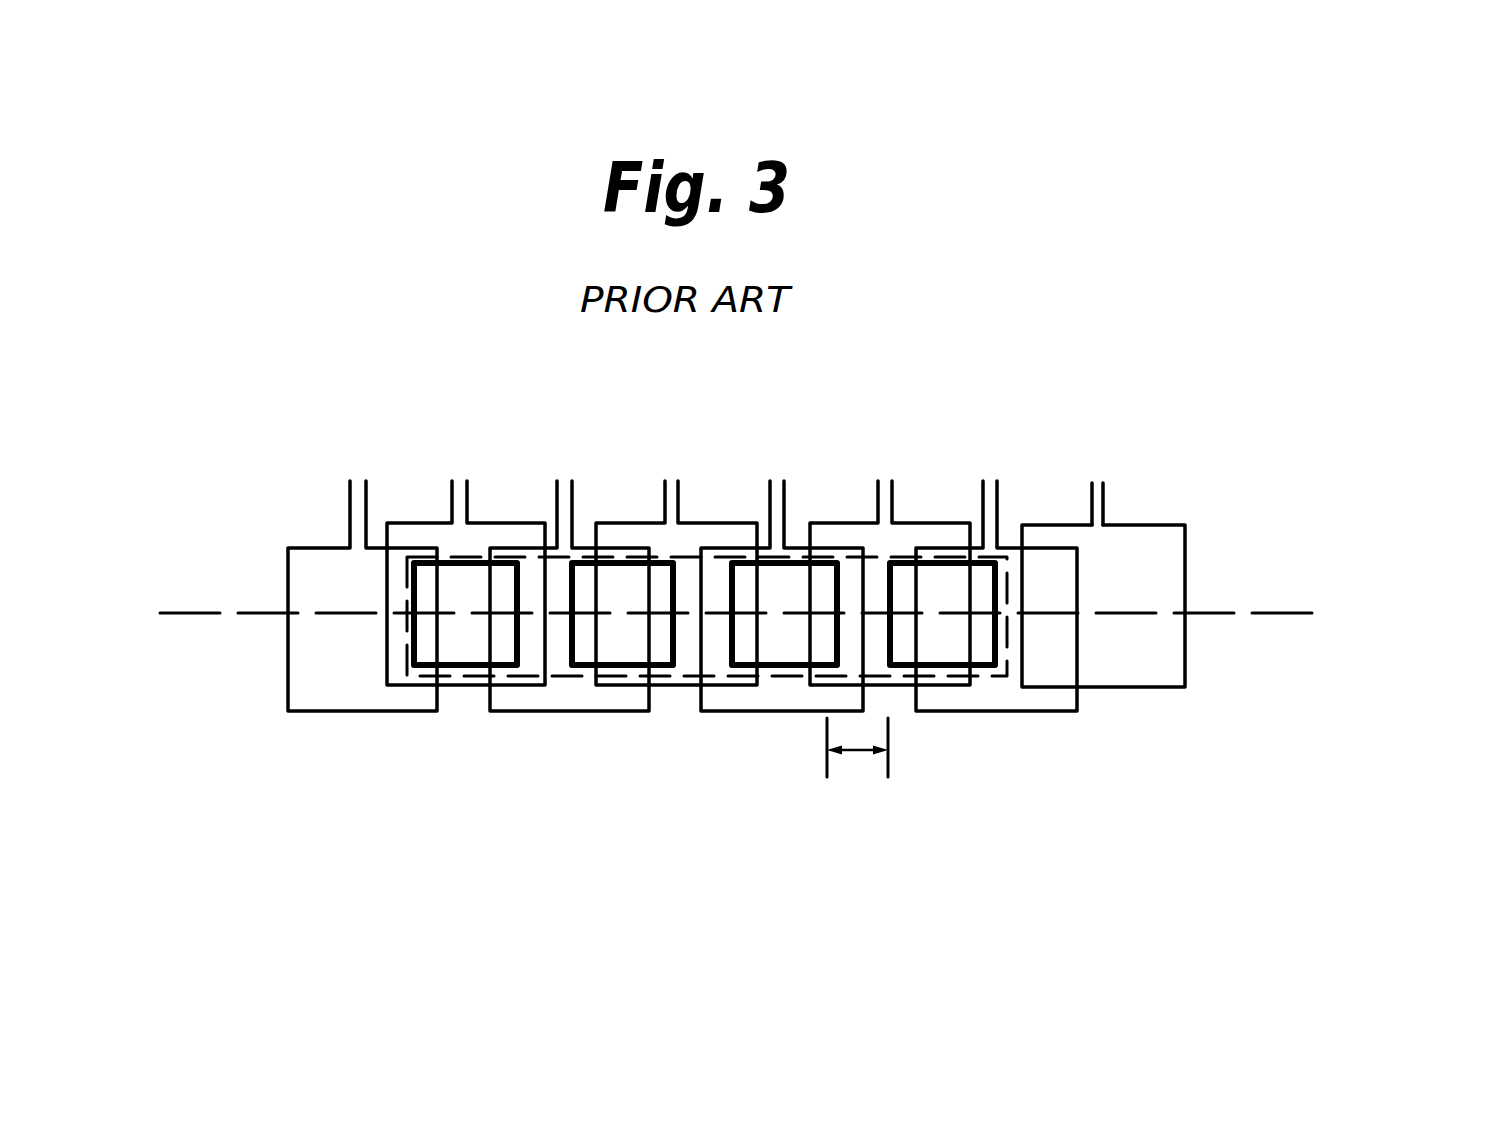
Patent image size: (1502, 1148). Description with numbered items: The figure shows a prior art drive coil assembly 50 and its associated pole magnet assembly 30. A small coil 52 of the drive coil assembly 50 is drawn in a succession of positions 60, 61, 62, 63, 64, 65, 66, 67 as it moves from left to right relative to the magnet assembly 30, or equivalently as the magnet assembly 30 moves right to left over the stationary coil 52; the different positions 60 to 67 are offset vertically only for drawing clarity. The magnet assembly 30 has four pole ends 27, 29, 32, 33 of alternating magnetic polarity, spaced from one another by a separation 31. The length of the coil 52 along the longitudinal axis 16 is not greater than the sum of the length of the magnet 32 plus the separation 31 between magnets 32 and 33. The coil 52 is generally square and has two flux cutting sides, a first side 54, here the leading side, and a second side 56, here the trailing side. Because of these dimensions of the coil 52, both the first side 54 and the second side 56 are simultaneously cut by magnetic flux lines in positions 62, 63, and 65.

The longitudinal axis 16 is at (183, 612).
The pole end 27 is at (435, 672).
The pole end 29 is at (583, 670).
The magnet assembly 30 is at (570, 675).
The separation 31 is at (853, 752).
The pole end 32 is at (785, 672).
The pole end 33 is at (955, 672).
The drive coil assembly 50 is at (1359, 604).
The coil 52 is at (1216, 532).
The first side 54 is at (1185, 647).
The second side 56 is at (1015, 668).
The coil position 60 is at (308, 516).
The coil position 61 is at (429, 496).
The coil position 62 is at (513, 501).
The coil position 63 is at (631, 499).
The coil position 64 is at (744, 497).
The coil position 65 is at (853, 497).
The coil position 66 is at (960, 503).
The coil position 67 is at (1065, 503).